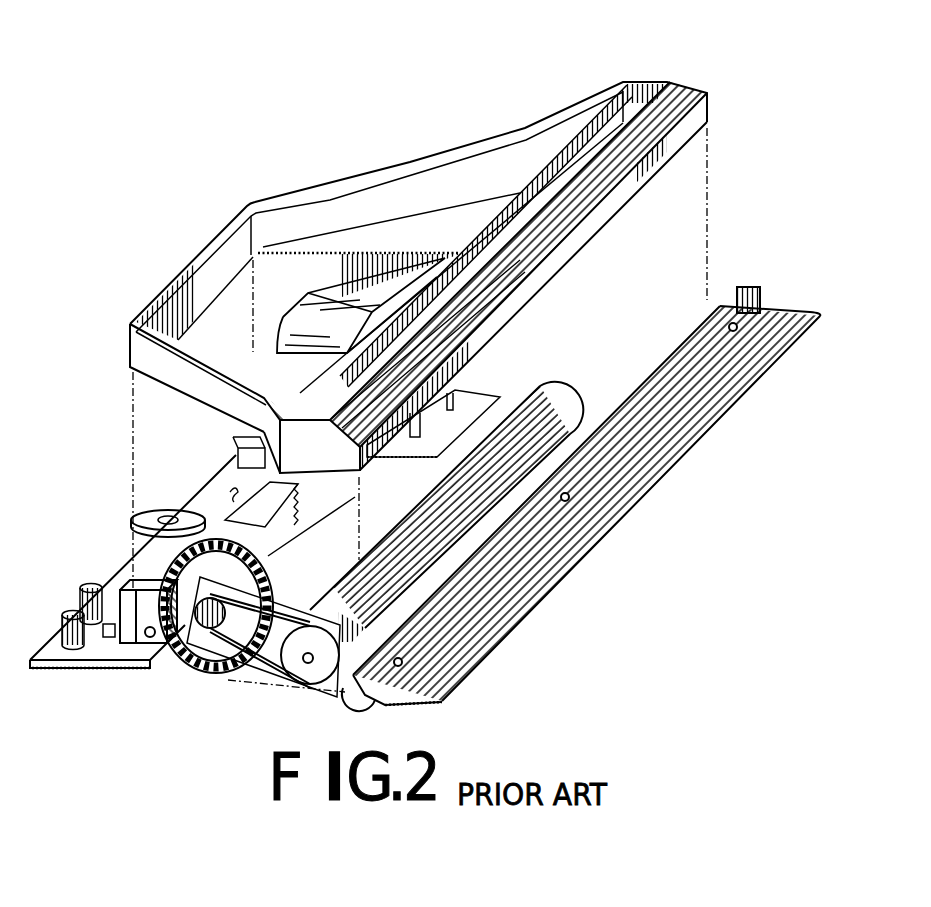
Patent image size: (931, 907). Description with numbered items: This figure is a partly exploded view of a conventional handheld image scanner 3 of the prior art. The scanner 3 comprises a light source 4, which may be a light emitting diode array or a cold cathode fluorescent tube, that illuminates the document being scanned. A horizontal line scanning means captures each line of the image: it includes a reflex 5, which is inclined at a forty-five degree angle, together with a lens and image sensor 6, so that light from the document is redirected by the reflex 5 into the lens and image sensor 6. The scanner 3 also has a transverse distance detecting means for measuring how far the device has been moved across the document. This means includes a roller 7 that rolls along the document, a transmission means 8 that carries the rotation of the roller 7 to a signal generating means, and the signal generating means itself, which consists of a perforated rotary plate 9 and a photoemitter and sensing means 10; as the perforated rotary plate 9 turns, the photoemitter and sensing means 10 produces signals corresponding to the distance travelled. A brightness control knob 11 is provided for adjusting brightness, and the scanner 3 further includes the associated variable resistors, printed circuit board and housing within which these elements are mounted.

The conventional handheld image scanner 3 is at (190, 242).
The light source 4 is at (643, 470).
The reflex 5 is at (690, 90).
The lens and image sensor 6 is at (330, 320).
The roller 7 is at (555, 398).
The transmission means 8 is at (247, 673).
The perforated rotary plate 9 is at (262, 576).
The photoemitter and sensing means 10 is at (130, 645).
The brightness control knob 11 is at (132, 518).